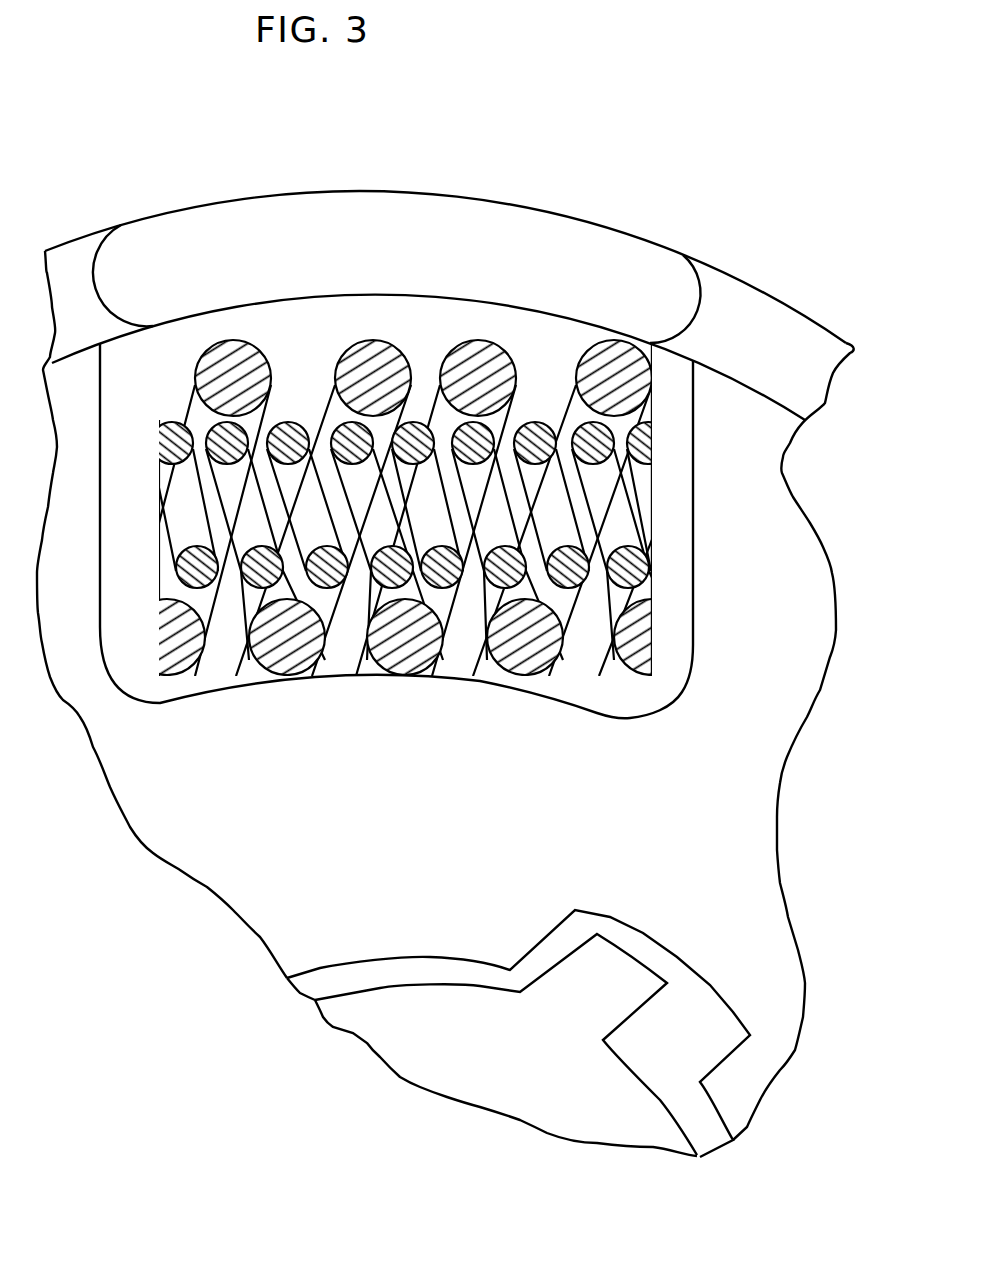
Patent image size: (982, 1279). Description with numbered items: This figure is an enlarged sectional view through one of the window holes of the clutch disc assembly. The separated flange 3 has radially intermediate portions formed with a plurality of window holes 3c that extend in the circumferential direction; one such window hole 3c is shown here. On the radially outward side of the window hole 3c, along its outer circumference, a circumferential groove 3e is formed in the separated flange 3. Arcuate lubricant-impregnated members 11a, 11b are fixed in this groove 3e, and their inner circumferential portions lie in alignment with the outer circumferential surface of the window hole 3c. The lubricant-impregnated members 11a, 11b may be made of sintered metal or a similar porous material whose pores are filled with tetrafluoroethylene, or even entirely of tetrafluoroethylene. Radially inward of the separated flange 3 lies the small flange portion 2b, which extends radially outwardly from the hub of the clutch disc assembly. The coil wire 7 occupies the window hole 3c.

The coil wire 7 is at (497, 342).
The lubricant-impregnated member 11a is at (462, 253).
The lubricant-impregnated member 11b is at (657, 268).
The circumferential groove 3e is at (780, 348).
The window hole 3c is at (672, 533).
The separated flange 3 is at (712, 770).
The flange portion 2b is at (536, 1065).